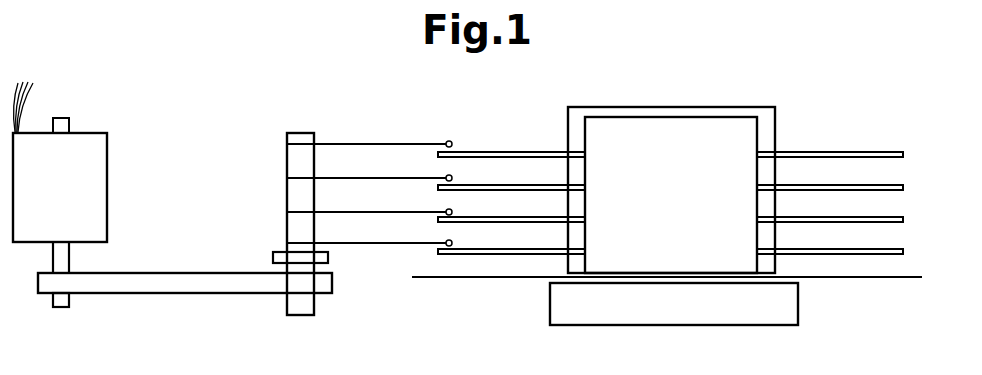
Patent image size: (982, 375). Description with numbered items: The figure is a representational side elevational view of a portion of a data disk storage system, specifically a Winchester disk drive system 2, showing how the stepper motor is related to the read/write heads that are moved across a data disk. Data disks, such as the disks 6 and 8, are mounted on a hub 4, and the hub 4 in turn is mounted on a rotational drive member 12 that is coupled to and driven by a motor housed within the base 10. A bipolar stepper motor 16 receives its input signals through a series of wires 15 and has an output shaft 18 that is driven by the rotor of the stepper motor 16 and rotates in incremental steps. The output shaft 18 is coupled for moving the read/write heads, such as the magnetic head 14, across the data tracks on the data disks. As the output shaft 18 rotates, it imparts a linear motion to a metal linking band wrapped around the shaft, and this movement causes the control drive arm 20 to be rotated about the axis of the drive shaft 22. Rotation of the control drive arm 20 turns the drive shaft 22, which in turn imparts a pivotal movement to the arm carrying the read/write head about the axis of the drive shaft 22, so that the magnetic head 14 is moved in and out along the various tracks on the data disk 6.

The Winchester disk drive system 2 is at (787, 93).
The hub 4 is at (590, 105).
The disk 6 is at (515, 150).
The disk 8 is at (510, 183).
The base 10 is at (550, 325).
The rotational drive member 12 is at (685, 280).
The magnetic head 14 is at (450, 141).
The wires 15 is at (33, 97).
The bipolar stepper motor 16 is at (100, 133).
The output shaft 18 is at (72, 260).
The control drive arm 20 is at (187, 278).
The drive shaft 22 is at (290, 194).